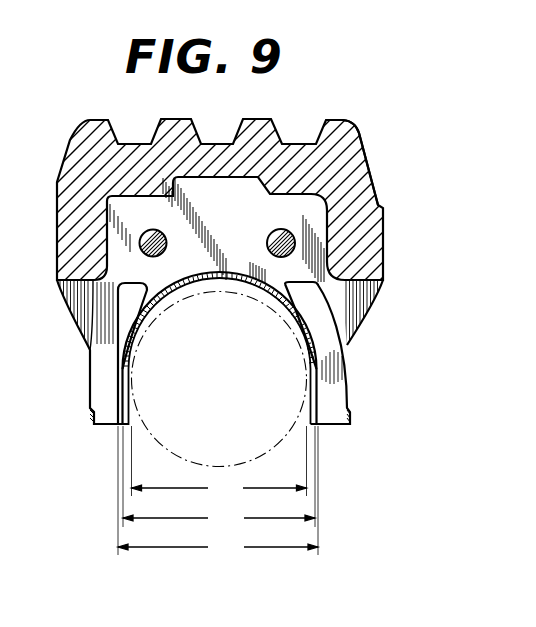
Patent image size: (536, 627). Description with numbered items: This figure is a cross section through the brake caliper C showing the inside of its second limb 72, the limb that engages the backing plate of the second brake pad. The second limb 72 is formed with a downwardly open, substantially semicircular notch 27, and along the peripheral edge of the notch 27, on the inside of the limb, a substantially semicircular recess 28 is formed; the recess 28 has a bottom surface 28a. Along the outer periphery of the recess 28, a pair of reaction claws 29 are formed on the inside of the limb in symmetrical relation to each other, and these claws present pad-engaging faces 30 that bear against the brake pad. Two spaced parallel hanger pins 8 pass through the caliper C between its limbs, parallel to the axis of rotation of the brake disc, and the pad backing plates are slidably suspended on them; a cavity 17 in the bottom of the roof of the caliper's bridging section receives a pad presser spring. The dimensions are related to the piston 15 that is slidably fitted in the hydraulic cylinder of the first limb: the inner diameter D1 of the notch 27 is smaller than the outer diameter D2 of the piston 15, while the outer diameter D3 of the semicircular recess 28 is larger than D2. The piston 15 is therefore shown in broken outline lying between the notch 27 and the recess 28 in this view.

The brake caliper C is at (338, 121).
The second limb 72 is at (351, 142).
The cavity 17 is at (212, 179).
The hanger pins 8 is at (162, 239).
The pad-engaging faces 30 is at (337, 372).
The reaction claws 29 is at (91, 417).
The notch 27 is at (296, 345).
The recess 28 is at (306, 383).
The bottom surface 28a is at (129, 420).
The piston 15 is at (150, 434).
The inner diameter of notch D1 is at (219, 463).
The outer diameter of piston D2 is at (219, 478).
The outer diameter of recess D3 is at (218, 493).